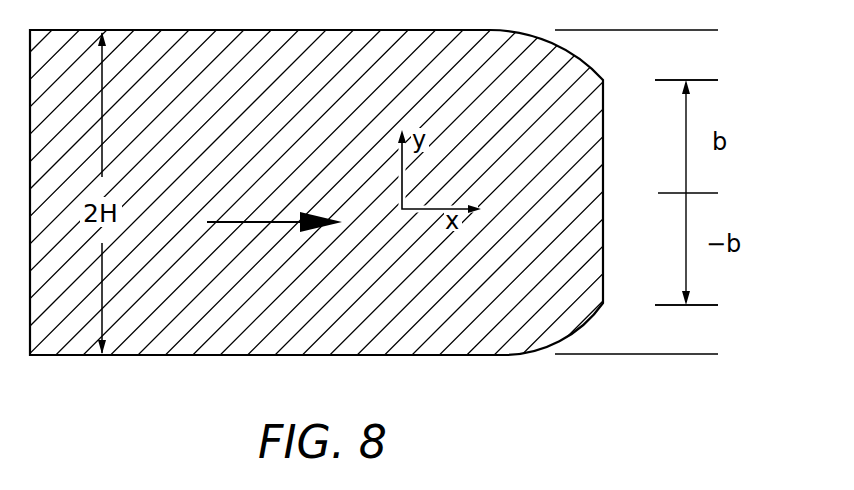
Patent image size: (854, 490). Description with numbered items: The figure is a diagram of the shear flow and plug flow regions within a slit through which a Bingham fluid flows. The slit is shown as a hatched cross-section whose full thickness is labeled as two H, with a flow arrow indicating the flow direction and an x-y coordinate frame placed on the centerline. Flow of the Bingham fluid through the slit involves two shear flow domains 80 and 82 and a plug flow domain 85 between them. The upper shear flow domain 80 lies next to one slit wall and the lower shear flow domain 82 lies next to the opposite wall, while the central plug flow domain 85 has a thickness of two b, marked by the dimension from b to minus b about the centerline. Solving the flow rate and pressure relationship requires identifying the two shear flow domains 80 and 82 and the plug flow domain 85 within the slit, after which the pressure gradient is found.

The shear flow domain 80 is at (728, 30).
The plug flow domain 85 is at (728, 80).
The shear flow domain 82 is at (728, 305).